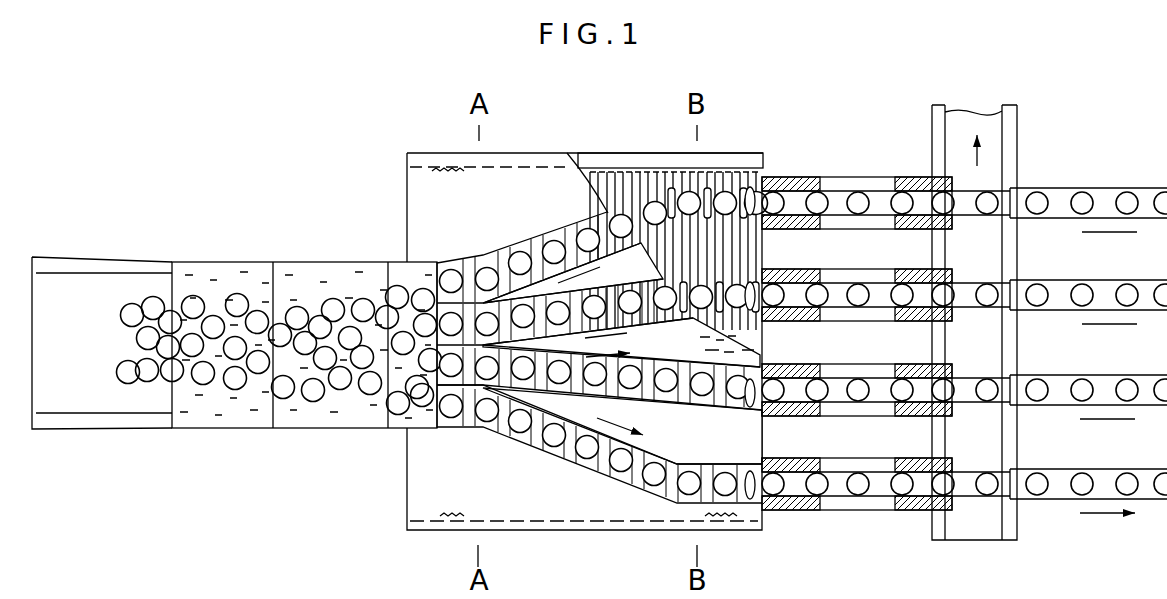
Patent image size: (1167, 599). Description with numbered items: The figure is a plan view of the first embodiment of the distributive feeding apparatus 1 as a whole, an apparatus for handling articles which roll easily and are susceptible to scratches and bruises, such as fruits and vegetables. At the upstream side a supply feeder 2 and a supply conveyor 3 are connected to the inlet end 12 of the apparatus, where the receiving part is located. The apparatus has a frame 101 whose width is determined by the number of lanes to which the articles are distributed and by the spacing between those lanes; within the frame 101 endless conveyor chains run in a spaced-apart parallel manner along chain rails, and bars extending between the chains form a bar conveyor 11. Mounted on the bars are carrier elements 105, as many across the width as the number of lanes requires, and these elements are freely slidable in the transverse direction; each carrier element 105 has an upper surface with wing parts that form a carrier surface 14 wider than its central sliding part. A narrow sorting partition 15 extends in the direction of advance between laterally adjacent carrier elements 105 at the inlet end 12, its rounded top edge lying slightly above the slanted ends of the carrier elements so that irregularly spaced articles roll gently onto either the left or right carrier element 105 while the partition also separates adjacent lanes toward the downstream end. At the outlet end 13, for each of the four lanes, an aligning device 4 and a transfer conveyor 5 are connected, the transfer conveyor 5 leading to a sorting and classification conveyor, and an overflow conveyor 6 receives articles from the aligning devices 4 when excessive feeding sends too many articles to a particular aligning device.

The distributive feeding apparatus 1 is at (520, 183).
The supply feeder 2 is at (320, 262).
The supply conveyor 3 is at (88, 272).
The aligning device 4 is at (850, 177).
The transfer conveyor 5 is at (1100, 188).
The overflow conveyor 6 is at (998, 159).
The bar conveyor 11 is at (648, 190).
The inlet end 12 is at (440, 265).
The outlet end 13 is at (757, 182).
The carrier surface 14 is at (647, 482).
The sorting partition 15 is at (478, 302).
The frame 101 is at (628, 154).
The carrier element 105 is at (572, 463).